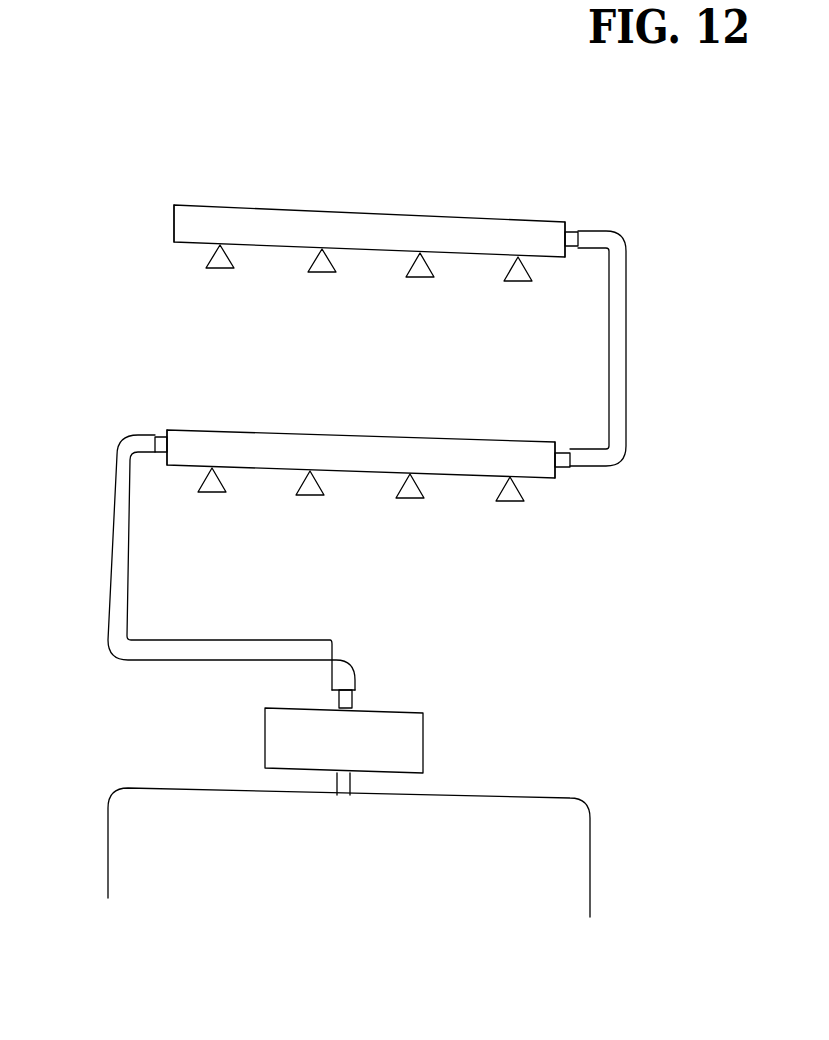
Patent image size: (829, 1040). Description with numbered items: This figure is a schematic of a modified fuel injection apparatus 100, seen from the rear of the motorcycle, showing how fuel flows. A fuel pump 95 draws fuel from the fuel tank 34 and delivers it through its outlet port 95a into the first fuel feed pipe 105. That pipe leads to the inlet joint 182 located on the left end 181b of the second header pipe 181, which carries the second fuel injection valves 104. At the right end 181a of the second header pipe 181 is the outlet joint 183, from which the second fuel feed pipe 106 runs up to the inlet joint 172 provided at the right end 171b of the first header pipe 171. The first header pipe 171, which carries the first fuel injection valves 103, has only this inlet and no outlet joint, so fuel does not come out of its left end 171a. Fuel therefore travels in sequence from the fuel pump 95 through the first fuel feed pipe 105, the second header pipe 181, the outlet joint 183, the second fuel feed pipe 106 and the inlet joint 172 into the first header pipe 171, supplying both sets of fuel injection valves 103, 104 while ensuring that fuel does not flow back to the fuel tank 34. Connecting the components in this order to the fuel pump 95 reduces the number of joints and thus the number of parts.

The fuel injection apparatus 100 is at (86, 153).
The first header pipe 171 is at (392, 214).
The left end of first header pipe 171a is at (197, 205).
The right end of first header pipe 171b is at (543, 232).
The inlet joint 172 is at (573, 231).
The first fuel injection valves 103 is at (321, 274).
The second fuel feed pipe 106 is at (627, 353).
The second header pipe 181 is at (343, 435).
The right end of second header pipe 181a is at (530, 460).
The left end of second header pipe 181b is at (203, 440).
The inlet joint 182 is at (160, 438).
The outlet joint 183 is at (562, 470).
The second fuel injection valves 104 is at (310, 497).
The first fuel feed pipe 105 is at (310, 645).
The fuel pump 95 is at (395, 751).
The outlet port 95a is at (352, 702).
The fuel tank 34 is at (570, 872).